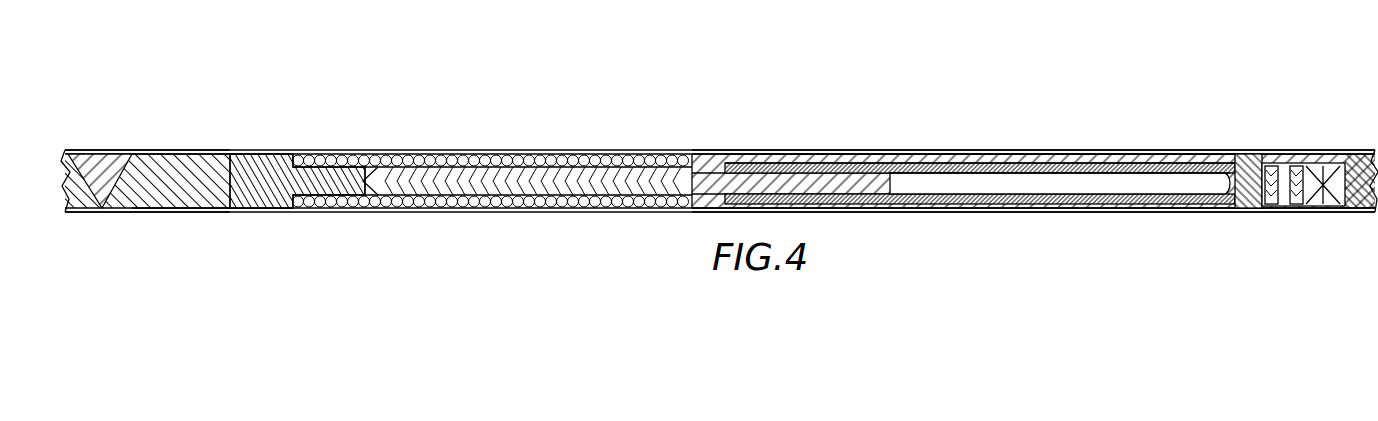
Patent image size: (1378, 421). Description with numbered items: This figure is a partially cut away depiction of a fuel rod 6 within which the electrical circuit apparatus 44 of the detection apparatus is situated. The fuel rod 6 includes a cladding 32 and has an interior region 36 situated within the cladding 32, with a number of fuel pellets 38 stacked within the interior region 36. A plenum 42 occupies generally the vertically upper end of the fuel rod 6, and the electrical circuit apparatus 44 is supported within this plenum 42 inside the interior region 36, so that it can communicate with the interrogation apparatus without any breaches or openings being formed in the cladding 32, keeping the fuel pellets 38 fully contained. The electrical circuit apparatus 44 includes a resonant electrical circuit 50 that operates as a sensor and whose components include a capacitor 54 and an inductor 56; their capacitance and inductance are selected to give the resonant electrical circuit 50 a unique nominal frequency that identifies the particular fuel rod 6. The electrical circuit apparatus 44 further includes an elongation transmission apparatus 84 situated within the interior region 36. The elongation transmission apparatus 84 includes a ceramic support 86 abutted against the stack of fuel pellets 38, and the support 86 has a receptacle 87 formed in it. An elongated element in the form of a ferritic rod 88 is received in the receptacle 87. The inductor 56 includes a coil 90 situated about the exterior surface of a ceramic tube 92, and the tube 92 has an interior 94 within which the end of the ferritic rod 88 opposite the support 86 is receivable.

The fuel rod 6 is at (115, 144).
The cladding 32 is at (120, 212).
The interior region 36 is at (145, 150).
The fuel pellets 38 is at (195, 150).
The plenum 42 is at (1252, 165).
The electrical circuit apparatus 44 is at (917, 160).
The resonant electrical circuit 50 is at (936, 160).
The capacitor 54 is at (1278, 158).
The inductor 56 is at (1036, 162).
The elongation transmission apparatus 84 is at (1022, 210).
The support 86 is at (248, 150).
The receptacle 87 is at (364, 168).
The ferritic rod 88 is at (907, 162).
The coil 90 is at (945, 206).
The tube 92 is at (1190, 180).
The interior 94 is at (1118, 188).